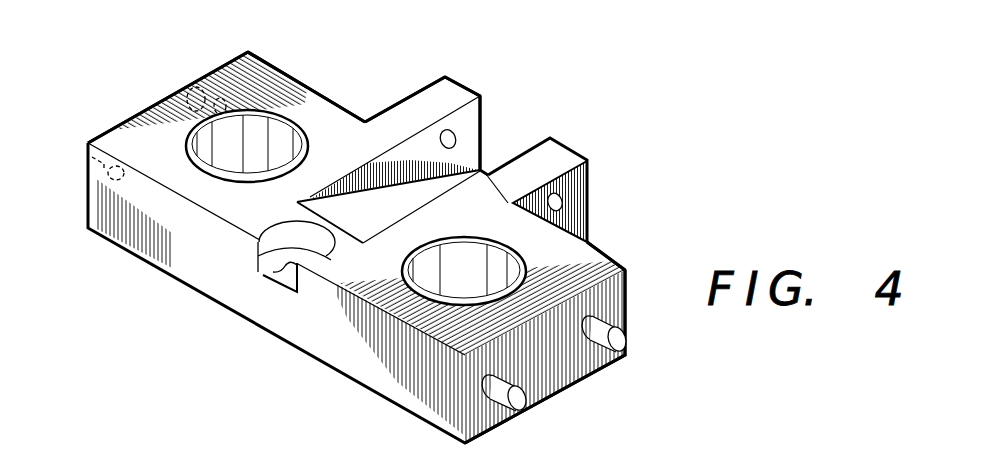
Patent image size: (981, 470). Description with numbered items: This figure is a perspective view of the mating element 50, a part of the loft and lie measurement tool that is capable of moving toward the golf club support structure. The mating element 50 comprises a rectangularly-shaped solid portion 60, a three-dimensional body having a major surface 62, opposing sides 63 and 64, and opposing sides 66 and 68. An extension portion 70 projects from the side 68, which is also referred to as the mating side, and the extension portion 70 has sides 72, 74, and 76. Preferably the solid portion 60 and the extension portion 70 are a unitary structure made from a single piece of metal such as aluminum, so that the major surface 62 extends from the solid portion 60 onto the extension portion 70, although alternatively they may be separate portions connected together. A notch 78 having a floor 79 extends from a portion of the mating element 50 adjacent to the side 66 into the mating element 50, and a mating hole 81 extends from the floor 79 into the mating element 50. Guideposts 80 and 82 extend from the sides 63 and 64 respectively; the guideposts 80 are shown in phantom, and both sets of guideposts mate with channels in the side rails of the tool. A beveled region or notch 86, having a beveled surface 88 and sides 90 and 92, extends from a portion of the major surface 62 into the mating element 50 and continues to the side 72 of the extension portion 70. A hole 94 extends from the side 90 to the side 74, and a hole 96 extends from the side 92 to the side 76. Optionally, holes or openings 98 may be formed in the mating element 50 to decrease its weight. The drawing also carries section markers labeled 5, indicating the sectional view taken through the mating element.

The mating element 50 is at (725, 417).
The rectangularly-shaped solid portion 60 is at (133, 78).
The major surface 62 is at (230, 83).
The side 63 is at (133, 115).
The side 64 is at (562, 376).
The side 66 is at (147, 242).
The mating side 68 is at (280, 68).
The extension portion 70 is at (383, 100).
The side 72 is at (460, 85).
The side 74 is at (412, 87).
The side 76 is at (575, 214).
The notch 78 is at (256, 258).
The floor 79 is at (273, 272).
The guideposts 80 is at (195, 88).
The mating hole 81 is at (285, 279).
The guideposts 82 is at (520, 402).
The beveled region 86 is at (408, 163).
The beveled surface 88 is at (318, 207).
The side 90 is at (467, 150).
The side 92 is at (541, 140).
The hole 94 is at (456, 135).
The hole 96 is at (565, 202).
The holes 98 is at (205, 155).
The section line 5- 5 is at (603, 82).